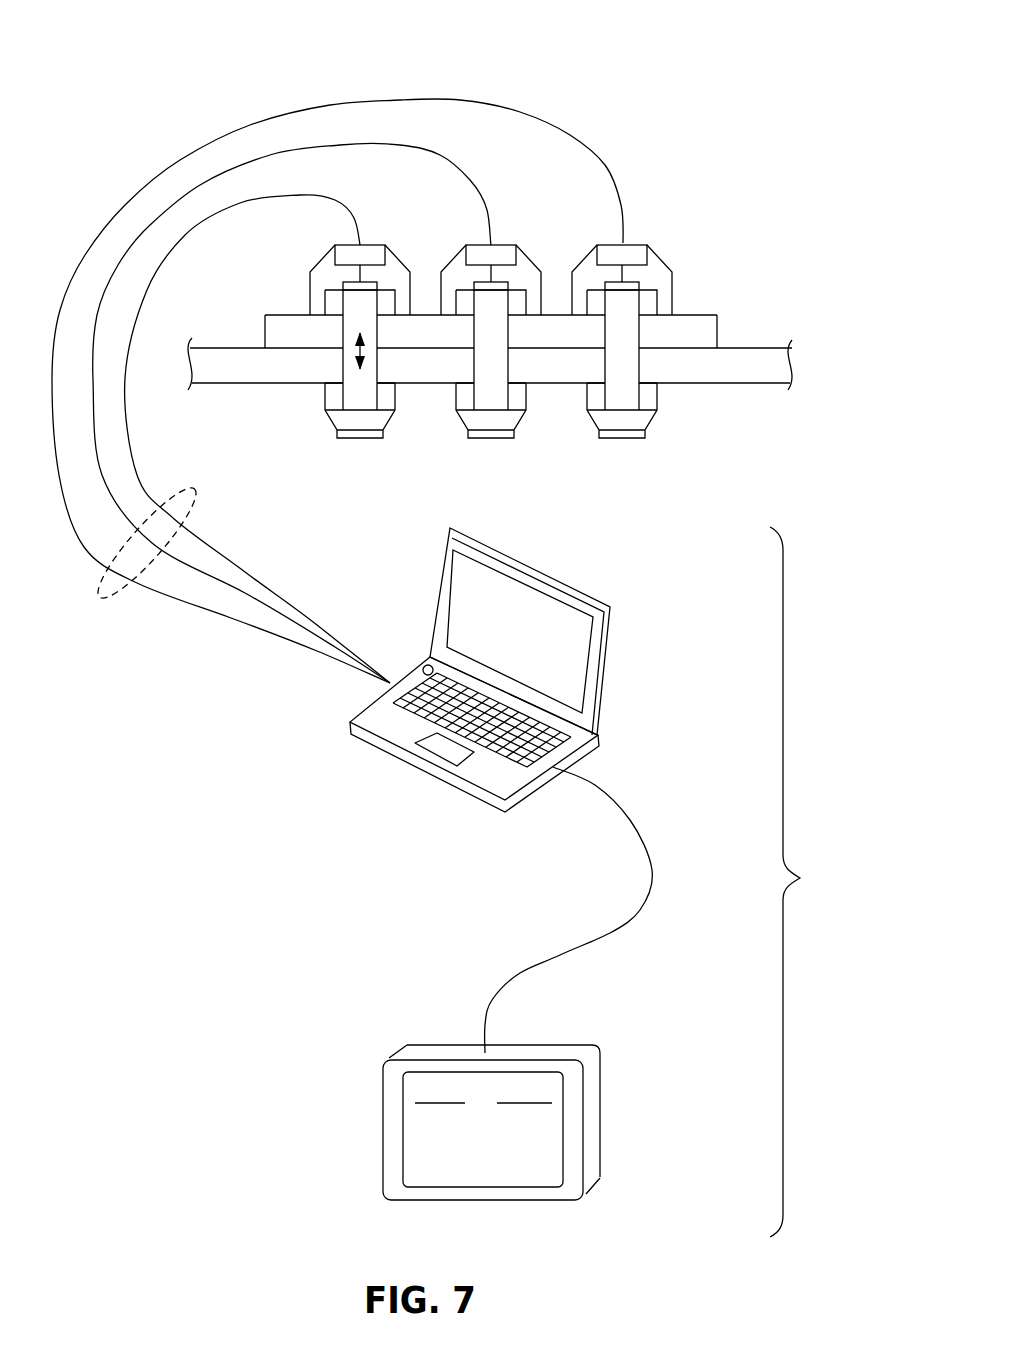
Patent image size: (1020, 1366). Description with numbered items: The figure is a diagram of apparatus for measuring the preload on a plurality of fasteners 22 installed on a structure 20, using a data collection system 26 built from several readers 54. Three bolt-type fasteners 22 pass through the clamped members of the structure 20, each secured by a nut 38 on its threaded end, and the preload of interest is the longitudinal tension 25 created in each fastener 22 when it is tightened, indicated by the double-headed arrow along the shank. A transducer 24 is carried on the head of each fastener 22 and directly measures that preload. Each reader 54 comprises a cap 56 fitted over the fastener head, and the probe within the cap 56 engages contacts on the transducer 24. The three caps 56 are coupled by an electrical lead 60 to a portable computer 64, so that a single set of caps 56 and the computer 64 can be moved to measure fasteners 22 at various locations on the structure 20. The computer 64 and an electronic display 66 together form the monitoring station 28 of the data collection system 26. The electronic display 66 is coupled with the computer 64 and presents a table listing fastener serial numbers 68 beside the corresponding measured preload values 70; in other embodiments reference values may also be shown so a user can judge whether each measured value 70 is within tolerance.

The structure 20 is at (743, 338).
The fastener 22 is at (350, 373).
The transducer 24 is at (636, 283).
The longitudinal tension 25 is at (353, 345).
The data collection system 26 is at (215, 88).
The monitoring station 28 is at (659, 882).
The nut 38 is at (347, 420).
The reader 54 is at (367, 240).
The cap 56 is at (652, 249).
The electrical lead 60 is at (100, 597).
The computer 64 is at (623, 662).
The electronic display 66 is at (590, 1157).
The fastener serial numbers 68 is at (430, 1075).
The measured preload values 70 is at (557, 1090).